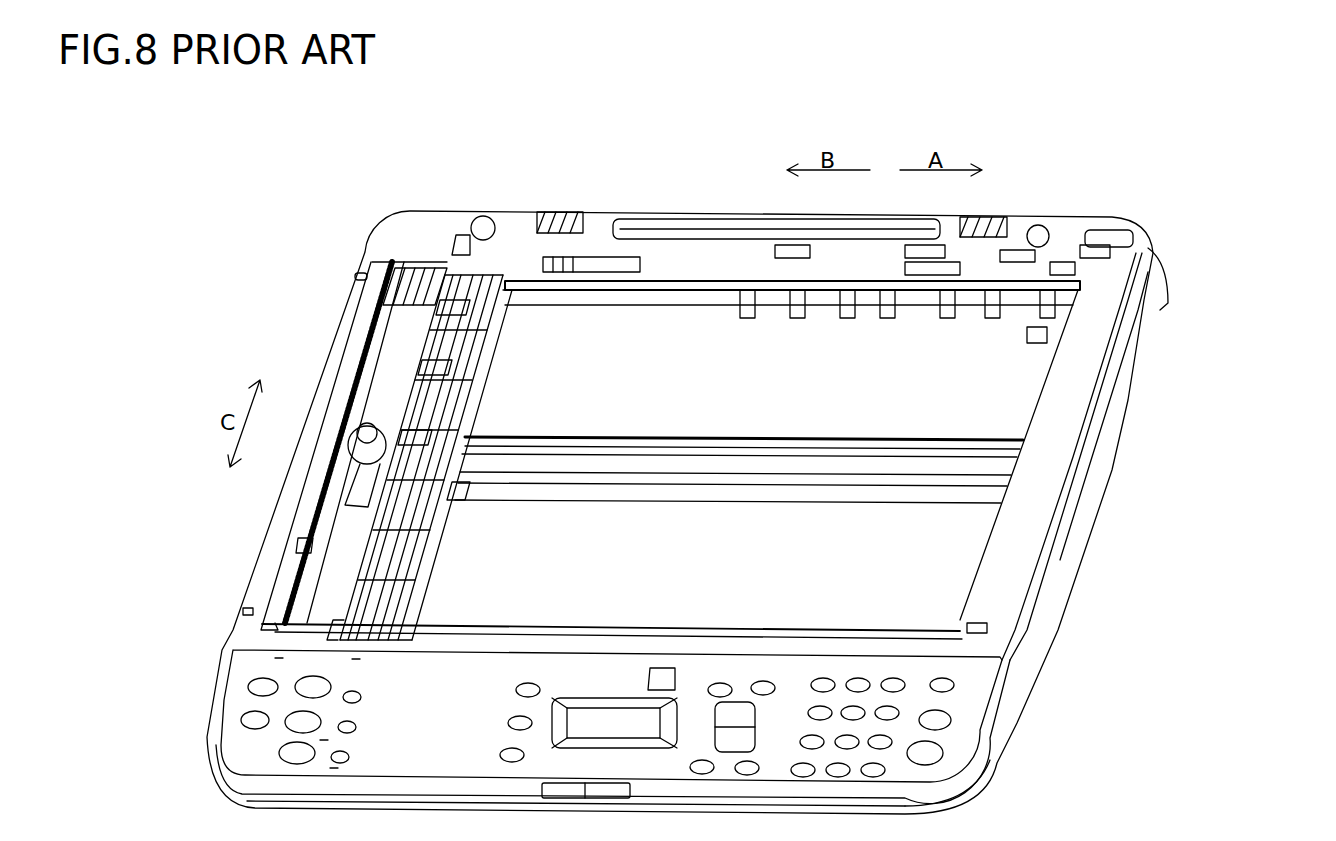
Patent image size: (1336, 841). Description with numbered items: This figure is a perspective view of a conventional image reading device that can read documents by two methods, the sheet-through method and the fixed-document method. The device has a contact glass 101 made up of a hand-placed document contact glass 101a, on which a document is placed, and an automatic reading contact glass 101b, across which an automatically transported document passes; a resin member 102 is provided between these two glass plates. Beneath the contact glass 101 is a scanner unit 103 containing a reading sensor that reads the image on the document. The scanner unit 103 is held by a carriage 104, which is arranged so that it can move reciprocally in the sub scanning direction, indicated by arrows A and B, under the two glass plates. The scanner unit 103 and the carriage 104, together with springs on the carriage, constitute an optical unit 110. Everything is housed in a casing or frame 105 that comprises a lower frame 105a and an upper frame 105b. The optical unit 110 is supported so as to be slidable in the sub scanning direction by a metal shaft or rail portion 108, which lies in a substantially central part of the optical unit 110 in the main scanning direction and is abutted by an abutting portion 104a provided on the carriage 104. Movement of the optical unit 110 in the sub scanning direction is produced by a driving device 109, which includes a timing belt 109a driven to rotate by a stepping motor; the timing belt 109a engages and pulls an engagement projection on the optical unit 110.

The contact glass 101 is at (660, 395).
The hand-placed document contact glass 101a is at (660, 395).
The automatic reading contact glass 101b is at (422, 231).
The resin member 102 is at (458, 243).
The scanner unit 103 is at (467, 355).
The carriage 104 is at (477, 403).
The abutting portion 104a is at (448, 483).
The casing (frame) 105 is at (758, 512).
The lower frame 105a is at (725, 512).
The upper frame 105b is at (1248, 327).
The shaft (rail portion) 108 is at (807, 490).
The driving device 109 is at (742, 402).
The timing belt 109a is at (777, 437).
The optical unit 110 is at (451, 383).